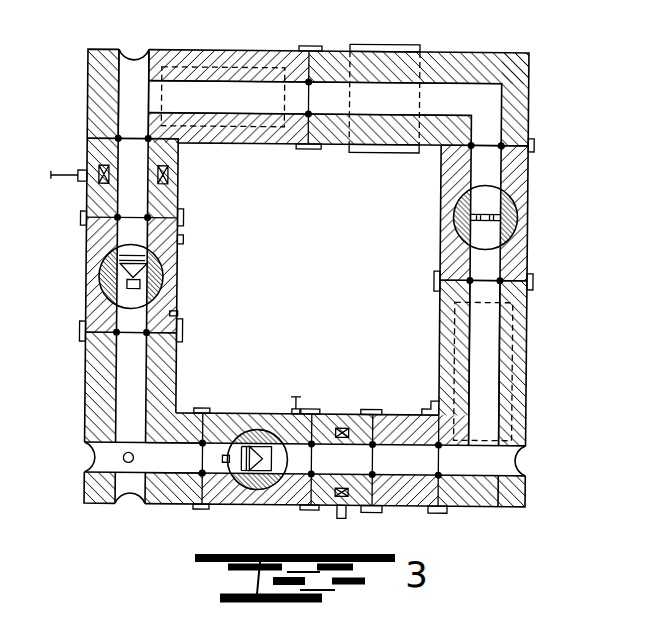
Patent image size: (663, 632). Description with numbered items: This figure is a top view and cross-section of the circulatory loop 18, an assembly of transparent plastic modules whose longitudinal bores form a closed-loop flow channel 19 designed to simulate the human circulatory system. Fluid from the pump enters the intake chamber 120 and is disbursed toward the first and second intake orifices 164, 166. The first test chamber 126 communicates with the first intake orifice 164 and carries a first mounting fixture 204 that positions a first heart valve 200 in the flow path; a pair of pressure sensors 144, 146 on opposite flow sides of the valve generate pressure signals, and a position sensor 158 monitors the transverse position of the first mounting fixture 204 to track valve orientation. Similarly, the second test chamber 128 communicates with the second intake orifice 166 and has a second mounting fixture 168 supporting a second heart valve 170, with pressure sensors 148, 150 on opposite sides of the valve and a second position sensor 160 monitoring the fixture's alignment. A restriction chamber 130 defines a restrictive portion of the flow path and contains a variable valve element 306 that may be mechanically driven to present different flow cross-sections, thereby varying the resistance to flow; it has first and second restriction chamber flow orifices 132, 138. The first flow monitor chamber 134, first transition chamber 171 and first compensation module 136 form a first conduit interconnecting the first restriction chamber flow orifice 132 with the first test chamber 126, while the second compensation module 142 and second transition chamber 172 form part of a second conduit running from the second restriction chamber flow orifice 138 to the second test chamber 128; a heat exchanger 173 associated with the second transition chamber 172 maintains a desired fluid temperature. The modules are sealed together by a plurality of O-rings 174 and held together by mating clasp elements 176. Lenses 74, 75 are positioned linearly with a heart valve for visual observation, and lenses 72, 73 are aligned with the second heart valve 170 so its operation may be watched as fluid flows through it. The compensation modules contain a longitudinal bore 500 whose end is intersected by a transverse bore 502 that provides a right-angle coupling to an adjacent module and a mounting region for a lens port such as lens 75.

The circulatory loop 18 is at (553, 95).
The flow channel 19 is at (145, 178).
The lens 72 is at (138, 506).
The lens 73 is at (135, 50).
The lens 74 is at (84, 459).
The lens 75 is at (532, 460).
The intake chamber 120 is at (97, 408).
The first test chamber 126 is at (232, 413).
The second test chamber 128 is at (95, 258).
The restriction chamber 130 is at (520, 191).
The first restriction chamber flow orifice 132 is at (487, 268).
The first flow monitor chamber 134 is at (345, 418).
The first compensation module 136 is at (522, 418).
The second restriction chamber flow orifice 138 is at (482, 152).
The second compensation module 142 is at (187, 50).
The pressure sensor 144 is at (219, 409).
The pressure sensor 146 is at (297, 396).
The pressure sensor 148 is at (178, 320).
The pressure sensor 150 is at (178, 243).
The position sensor 158 is at (236, 505).
The second position sensor 160 is at (86, 235).
The first intake orifice 164 is at (179, 462).
The second intake orifice 166 is at (126, 344).
The second mounting fixture 168 is at (100, 278).
The second heart valve 170 is at (158, 291).
The first transition chamber 171 is at (414, 388).
The second transition chamber 172 is at (487, 58).
The heat exchanger 173 is at (398, 46).
The O-ring 174 is at (327, 83).
The clasp element 176 is at (315, 82).
The first heart valve 200 is at (239, 494).
The first mounting fixture 204 is at (250, 418).
The variable valve element 306 is at (518, 218).
The longitudinal bore 500 is at (218, 96).
The transverse bore 502 is at (133, 73).